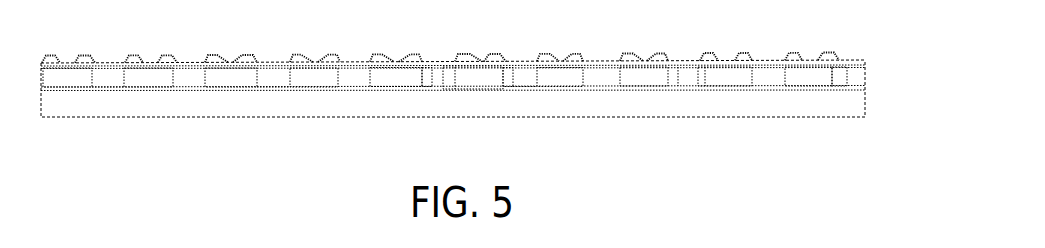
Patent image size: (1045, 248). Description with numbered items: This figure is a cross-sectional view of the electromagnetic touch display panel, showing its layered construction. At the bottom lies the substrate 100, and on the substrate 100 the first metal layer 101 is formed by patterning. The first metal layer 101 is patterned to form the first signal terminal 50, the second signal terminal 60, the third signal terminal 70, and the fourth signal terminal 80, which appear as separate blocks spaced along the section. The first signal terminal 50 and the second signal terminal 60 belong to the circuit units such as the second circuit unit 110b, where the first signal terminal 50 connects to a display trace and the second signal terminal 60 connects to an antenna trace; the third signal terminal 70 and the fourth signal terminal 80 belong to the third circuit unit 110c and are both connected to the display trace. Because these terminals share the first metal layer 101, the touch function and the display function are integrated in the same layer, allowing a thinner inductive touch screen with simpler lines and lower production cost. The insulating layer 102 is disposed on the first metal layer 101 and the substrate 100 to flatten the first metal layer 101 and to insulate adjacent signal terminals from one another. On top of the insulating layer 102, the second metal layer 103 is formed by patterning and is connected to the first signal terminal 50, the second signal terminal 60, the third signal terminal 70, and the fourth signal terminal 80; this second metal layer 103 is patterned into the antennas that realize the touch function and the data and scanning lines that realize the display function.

The substrate 100 is at (866, 103).
The first metal layer 101 is at (836, 55).
The insulating layer 102 is at (866, 70).
The second metal layer 103 is at (707, 54).
The first signal terminal 50 is at (322, 75).
The second signal terminal 60 is at (227, 80).
The third signal terminal 70 is at (143, 80).
The fourth signal terminal 80 is at (67, 80).
The second circuit unit 110b is at (277, 90).
The third circuit unit 110c is at (105, 90).